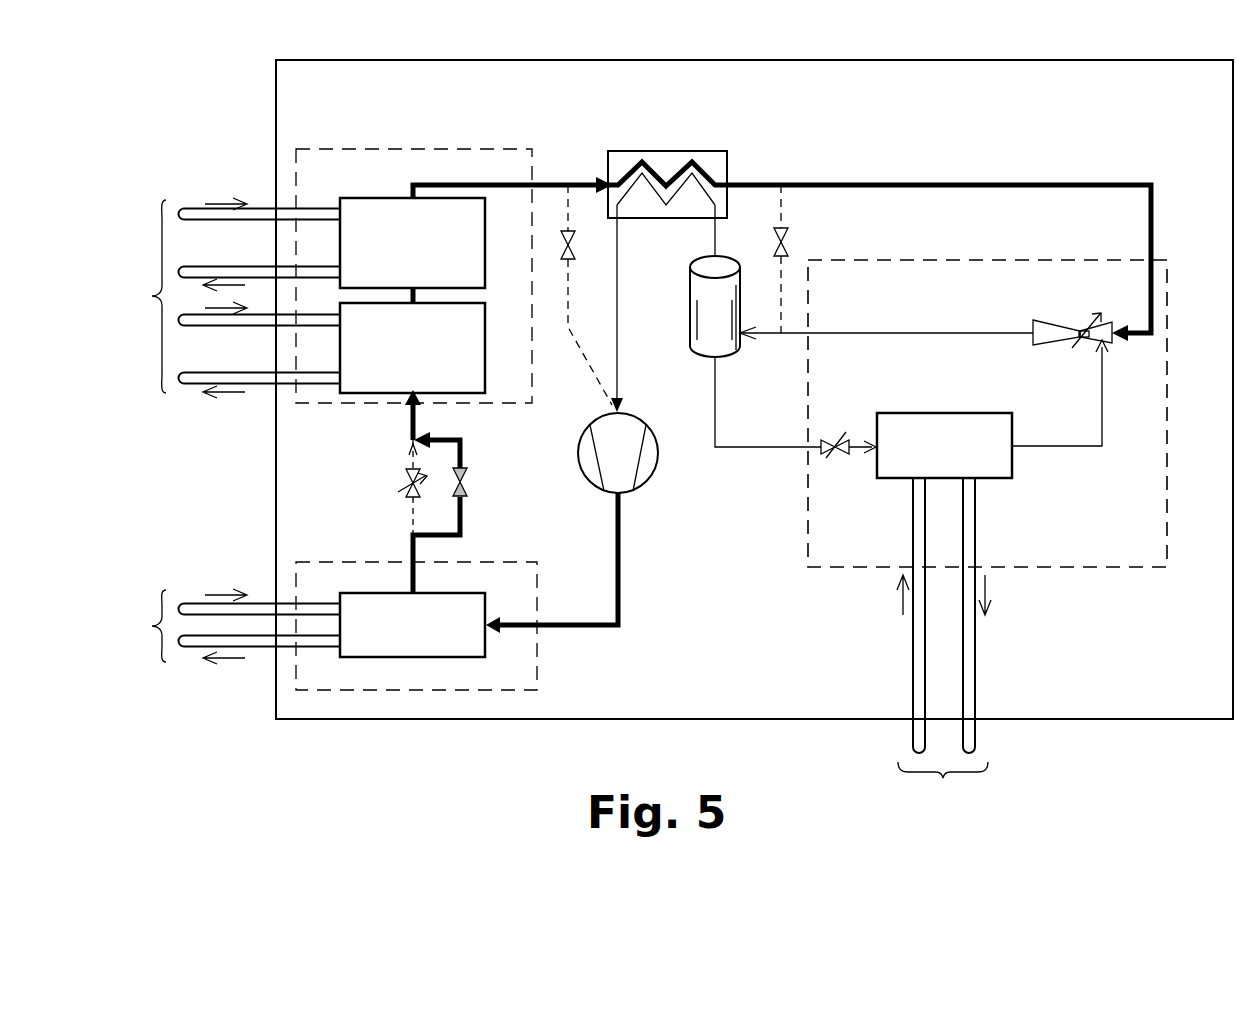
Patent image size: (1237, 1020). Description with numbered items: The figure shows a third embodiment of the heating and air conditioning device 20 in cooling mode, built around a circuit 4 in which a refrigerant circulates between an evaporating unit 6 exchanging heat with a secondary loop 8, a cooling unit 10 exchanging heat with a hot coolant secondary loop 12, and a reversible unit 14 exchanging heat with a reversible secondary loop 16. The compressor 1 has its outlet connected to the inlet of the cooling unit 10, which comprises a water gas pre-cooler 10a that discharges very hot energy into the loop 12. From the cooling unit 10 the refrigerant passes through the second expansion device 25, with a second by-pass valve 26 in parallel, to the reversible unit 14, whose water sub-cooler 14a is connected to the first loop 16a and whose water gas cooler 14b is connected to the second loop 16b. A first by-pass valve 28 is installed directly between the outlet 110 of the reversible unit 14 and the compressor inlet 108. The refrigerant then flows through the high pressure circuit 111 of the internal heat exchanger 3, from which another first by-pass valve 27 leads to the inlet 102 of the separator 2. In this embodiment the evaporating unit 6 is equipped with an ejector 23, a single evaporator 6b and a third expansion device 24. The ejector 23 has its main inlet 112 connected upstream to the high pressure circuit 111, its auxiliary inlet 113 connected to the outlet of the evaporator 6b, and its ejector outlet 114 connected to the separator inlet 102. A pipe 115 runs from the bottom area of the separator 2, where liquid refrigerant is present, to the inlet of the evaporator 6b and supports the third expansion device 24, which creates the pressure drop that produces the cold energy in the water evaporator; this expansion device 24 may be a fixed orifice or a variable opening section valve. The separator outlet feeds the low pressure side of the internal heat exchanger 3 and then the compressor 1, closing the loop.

The compressor 1 is at (650, 464).
The separator 2 is at (700, 332).
The internal heat exchanger 3 is at (706, 158).
The circuit 4 is at (1060, 182).
The evaporating unit 6 is at (987, 413).
The evaporator 6b is at (996, 478).
The secondary loop 8 is at (944, 637).
The cooling unit 10 is at (538, 655).
The water gas pre-cooler 10a is at (455, 650).
The secondary loop 12 is at (234, 626).
The reversible unit 14 is at (460, 148).
The water sub-cooler 14a is at (386, 208).
The water gas cooler 14b is at (372, 392).
The secondary loop 16 is at (146, 296).
The first loop 16a is at (256, 210).
The second loop 16b is at (252, 432).
The heating and air conditioning device 20 is at (754, 389).
The ejector 23 is at (1058, 325).
The third expansion device 24 is at (822, 458).
The second expansion device 25 is at (400, 494).
The second by-pass valve 26 is at (468, 494).
The first by-pass valve 27 is at (790, 237).
The first by-pass valve 28 is at (576, 256).
The inlet 102 is at (744, 338).
The compressor inlet 108 is at (628, 398).
The outlet 110 is at (560, 180).
The high pressure circuit 111 is at (618, 172).
The main inlet 112 is at (1122, 344).
The auxiliary inlet 113 is at (1086, 350).
The ejector outlet 114 is at (1026, 335).
The pipe 115 is at (738, 452).